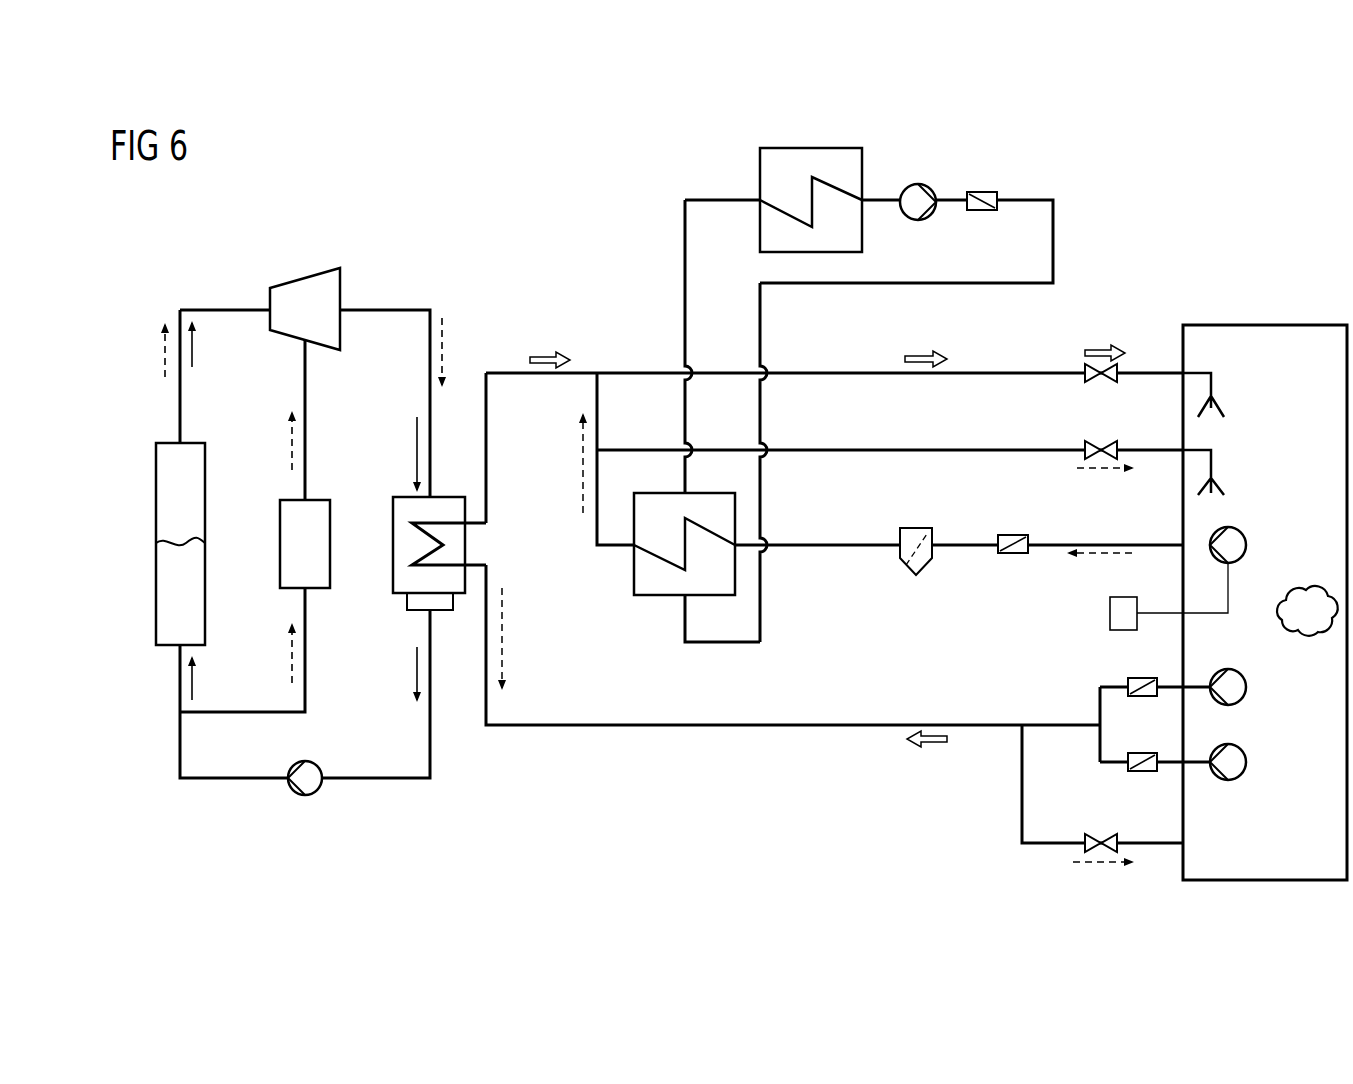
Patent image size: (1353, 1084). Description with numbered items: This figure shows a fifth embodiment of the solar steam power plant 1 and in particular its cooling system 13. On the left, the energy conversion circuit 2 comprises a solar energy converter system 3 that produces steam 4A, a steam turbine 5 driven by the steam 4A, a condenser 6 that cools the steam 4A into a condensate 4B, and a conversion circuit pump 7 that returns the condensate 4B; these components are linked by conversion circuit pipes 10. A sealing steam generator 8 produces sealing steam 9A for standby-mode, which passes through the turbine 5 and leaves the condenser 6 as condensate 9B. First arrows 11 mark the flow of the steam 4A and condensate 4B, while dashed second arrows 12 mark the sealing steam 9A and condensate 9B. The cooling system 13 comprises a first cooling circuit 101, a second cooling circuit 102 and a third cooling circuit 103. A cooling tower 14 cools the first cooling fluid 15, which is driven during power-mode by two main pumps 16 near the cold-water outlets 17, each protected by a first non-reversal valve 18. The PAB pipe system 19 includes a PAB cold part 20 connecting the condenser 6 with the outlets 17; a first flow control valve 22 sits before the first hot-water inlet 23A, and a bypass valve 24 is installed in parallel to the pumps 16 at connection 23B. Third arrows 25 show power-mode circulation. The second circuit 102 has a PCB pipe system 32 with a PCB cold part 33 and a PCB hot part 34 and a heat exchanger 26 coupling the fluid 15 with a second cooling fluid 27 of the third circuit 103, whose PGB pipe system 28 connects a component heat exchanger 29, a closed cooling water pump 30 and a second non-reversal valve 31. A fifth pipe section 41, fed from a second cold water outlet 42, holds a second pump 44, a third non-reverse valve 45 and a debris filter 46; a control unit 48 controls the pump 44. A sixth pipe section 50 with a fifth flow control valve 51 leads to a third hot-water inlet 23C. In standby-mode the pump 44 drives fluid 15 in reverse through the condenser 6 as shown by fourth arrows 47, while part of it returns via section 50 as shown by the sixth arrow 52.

The solar steam power plant 1 is at (1279, 200).
The energy conversion circuit 2 is at (375, 249).
The solar energy converter system 3 is at (205, 597).
The steam 4A is at (180, 415).
The condensate 4B is at (165, 603).
The steam turbine 5 is at (298, 288).
The condenser 6 is at (393, 543).
The conversion circuit pump 7 is at (305, 795).
The sealing steam generator 8 is at (280, 543).
The sealing steam 9A is at (305, 442).
The condensate of the sealing steam 9B is at (245, 712).
The conversion circuit pipes 10 is at (222, 310).
The first arrows 11 is at (192, 347).
The second arrows 12 is at (165, 345).
The cooling system 13 is at (531, 809).
The cooling tower 14 is at (1283, 325).
The first cooling fluid 15 is at (1305, 580).
The main pumps 16 is at (1246, 687).
The cold-water outlets 17 is at (1185, 687).
The first non-reversal valves 18 is at (1145, 678).
The PAB pipe system 19 is at (725, 373).
The PAB cold part 20 is at (626, 750).
The first flow control valve 22 is at (1085, 378).
The first hot-water inlet 23A is at (1183, 365).
The return connection point 23B is at (1183, 838).
The third hot-water inlet 23C is at (1183, 442).
The bypass valve 24 is at (1094, 836).
The third arrows 25 is at (550, 353).
The heat exchanger 26 is at (660, 595).
The second cooling fluid 27 is at (912, 206).
The PGB pipe system 28 is at (685, 277).
The component heat exchanger 29 is at (760, 181).
The closed cooling water pump 30 is at (918, 184).
The second non-reversal valve 31 is at (982, 192).
The PCB pipe system 32 is at (860, 557).
The PCB cold part 33 is at (810, 557).
The PCB hot part 34 is at (613, 560).
The fifth pipe section 41 is at (960, 548).
The second cold water outlet 42 is at (1252, 518).
The second pump 44 is at (1235, 527).
The third non-reverse valve 45 is at (1013, 535).
The service cooling water debris filter 46 is at (915, 528).
The fourth arrows 47 is at (583, 470).
The control unit 48 is at (1110, 630).
The sixth pipe section 50 is at (935, 450).
The fifth flow control valve 51 is at (1096, 441).
The sixth arrow 52 is at (1090, 472).
The first cooling circuit (PAB) 101 is at (686, 750).
The second cooling circuit (PCB) 102 is at (585, 554).
The third cooling circuit (PGB) 103 is at (668, 196).